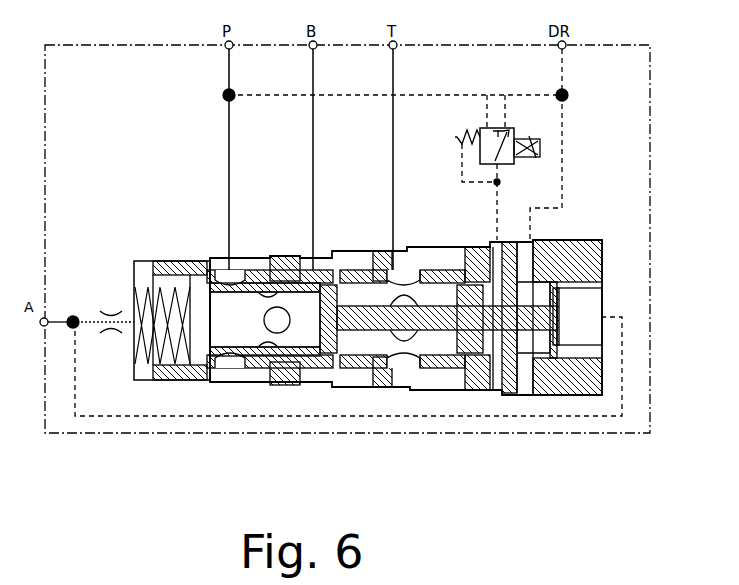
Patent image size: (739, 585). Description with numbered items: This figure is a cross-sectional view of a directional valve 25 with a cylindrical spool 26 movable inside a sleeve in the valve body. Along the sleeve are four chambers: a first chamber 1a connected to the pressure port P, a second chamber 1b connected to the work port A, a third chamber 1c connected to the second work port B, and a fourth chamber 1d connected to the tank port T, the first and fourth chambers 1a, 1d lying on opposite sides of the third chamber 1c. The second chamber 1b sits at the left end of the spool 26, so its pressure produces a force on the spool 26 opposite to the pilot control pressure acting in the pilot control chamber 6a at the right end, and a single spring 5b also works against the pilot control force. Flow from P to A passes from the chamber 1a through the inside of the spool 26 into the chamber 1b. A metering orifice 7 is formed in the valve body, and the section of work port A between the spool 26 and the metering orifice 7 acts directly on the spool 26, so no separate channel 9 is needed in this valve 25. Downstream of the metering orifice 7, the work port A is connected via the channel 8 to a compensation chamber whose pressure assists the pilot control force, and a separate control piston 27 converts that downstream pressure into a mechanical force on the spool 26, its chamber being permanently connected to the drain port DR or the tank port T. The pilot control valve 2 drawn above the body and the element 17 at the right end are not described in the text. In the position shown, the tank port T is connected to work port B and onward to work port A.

The first chamber 1a is at (222, 262).
The second chamber 1b is at (172, 290).
The third chamber 1c is at (358, 258).
The fourth chamber 1d is at (448, 251).
The pilot valve 2 is at (554, 159).
The spring 5b is at (155, 378).
The pilot control chamber 6a is at (490, 333).
The metering orifice 7 is at (113, 308).
The channel 8 is at (115, 418).
The channel 9 is at (130, 330).
The piston 17 is at (572, 310).
The valve 25 is at (240, 436).
The spool 26 is at (358, 336).
The control piston 27 is at (567, 343).